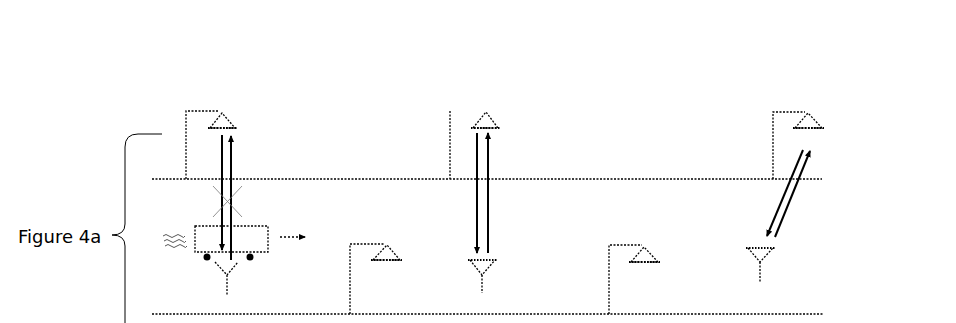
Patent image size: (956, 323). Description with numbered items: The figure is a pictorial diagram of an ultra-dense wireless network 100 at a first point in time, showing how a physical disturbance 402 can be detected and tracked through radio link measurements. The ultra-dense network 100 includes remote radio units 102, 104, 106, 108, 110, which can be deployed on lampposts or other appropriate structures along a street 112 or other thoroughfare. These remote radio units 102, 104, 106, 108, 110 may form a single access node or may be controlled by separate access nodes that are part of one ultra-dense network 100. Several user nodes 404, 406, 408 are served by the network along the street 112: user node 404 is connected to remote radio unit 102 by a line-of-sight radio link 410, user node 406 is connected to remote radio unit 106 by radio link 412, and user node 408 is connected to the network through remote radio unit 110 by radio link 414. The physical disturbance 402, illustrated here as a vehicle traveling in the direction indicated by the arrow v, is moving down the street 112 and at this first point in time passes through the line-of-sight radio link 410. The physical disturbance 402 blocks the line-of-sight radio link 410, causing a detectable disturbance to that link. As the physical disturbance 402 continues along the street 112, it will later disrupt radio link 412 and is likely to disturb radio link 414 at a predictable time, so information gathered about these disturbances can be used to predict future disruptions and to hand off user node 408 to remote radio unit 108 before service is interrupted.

The ultra-dense network 100 is at (612, 58).
The remote radio unit 102 is at (230, 121).
The remote radio unit 104 is at (395, 247).
The remote radio unit 106 is at (496, 121).
The remote radio unit 108 is at (652, 250).
The remote radio unit 110 is at (821, 120).
The street 112 is at (583, 214).
The physical disturbance 402 is at (234, 241).
The user node 404 is at (236, 268).
The user node 406 is at (490, 268).
The user node 408 is at (771, 256).
The LoS radio link 410 is at (238, 169).
The radio link 412 is at (520, 204).
The radio link 414 is at (823, 203).